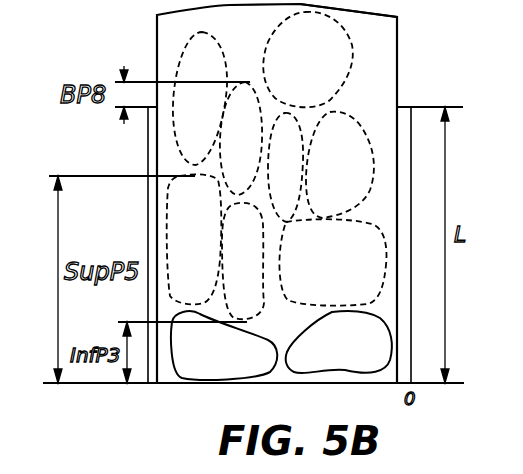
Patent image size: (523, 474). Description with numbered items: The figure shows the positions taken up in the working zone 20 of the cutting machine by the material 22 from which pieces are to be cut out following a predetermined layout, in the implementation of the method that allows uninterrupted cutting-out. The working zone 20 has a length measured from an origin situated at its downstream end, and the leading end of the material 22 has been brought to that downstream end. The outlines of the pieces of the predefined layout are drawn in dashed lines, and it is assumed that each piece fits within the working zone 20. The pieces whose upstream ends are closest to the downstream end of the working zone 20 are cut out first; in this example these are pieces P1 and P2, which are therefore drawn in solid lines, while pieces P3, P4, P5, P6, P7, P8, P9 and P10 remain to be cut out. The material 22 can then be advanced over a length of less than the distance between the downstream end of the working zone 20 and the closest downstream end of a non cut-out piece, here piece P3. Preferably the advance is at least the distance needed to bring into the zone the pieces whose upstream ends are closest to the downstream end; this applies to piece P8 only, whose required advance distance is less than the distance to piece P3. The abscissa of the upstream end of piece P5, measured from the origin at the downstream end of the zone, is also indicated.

The working zone 20 is at (403, 107).
The material 22 is at (378, 58).
The piece P1 is at (224, 345).
The piece P2 is at (339, 342).
The piece P3 is at (243, 261).
The piece P4 is at (332, 262).
The piece P5 is at (194, 239).
The piece P6 is at (340, 165).
The piece P7 is at (285, 167).
The piece P8 is at (241, 138).
The piece P9 is at (200, 98).
The piece P10 is at (308, 59).